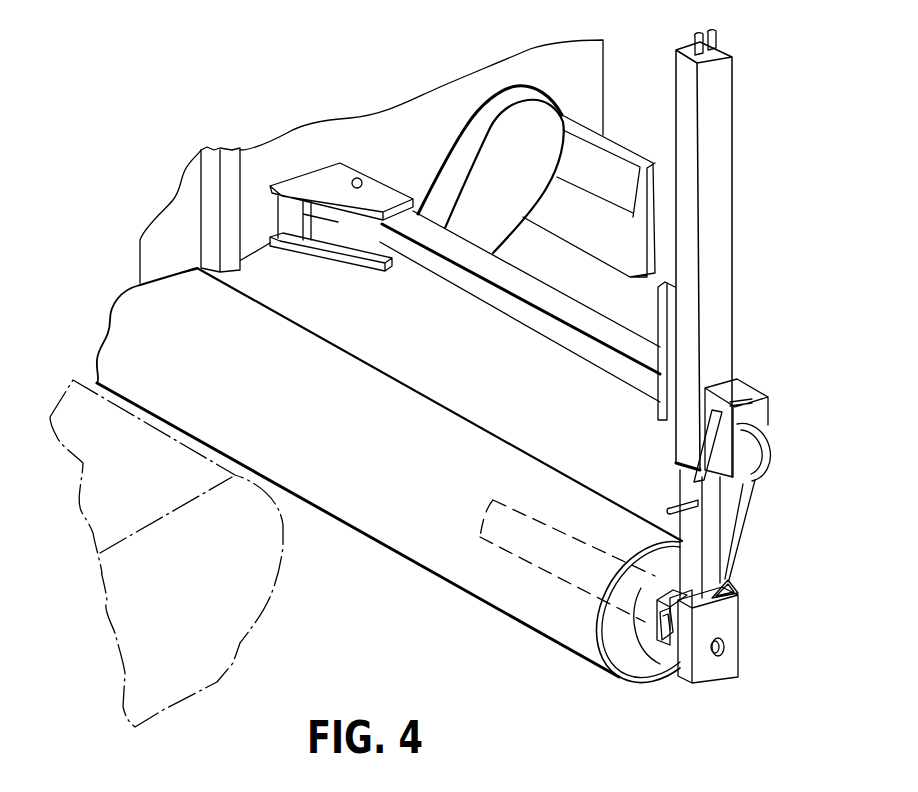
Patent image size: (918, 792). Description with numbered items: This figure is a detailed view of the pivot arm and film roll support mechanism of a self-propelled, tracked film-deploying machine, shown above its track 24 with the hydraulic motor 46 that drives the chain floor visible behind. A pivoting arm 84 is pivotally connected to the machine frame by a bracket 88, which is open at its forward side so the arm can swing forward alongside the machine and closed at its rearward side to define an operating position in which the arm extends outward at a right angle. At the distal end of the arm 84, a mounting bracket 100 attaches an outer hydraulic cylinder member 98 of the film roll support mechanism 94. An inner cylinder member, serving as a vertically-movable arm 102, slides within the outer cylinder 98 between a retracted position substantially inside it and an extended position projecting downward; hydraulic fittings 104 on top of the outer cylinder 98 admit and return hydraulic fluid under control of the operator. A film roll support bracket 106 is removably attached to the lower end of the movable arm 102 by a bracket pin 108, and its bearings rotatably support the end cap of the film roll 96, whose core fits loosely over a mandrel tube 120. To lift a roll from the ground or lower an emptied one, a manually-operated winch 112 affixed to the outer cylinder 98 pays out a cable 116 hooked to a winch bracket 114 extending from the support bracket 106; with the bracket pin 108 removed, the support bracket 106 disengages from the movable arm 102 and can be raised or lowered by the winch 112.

The track 24 is at (240, 661).
The hydraulic motor 46 is at (510, 120).
The pivoting arm 84 is at (548, 325).
The bracket 88 is at (343, 245).
The film roll support mechanism 94 is at (753, 320).
The film roll 96 is at (360, 362).
The outer hydraulic cylinder member 98 is at (735, 257).
The mounting bracket 100 is at (660, 417).
The vertically-movable arm 102 is at (713, 535).
The hydraulic fittings 104 is at (697, 33).
The film roll support bracket 106 is at (680, 665).
The bracket pin 108 is at (667, 632).
The manually-operated winch 112 is at (778, 452).
The winch bracket 114 is at (739, 586).
The cable 116 is at (750, 507).
The mandrel tube 120 is at (530, 565).